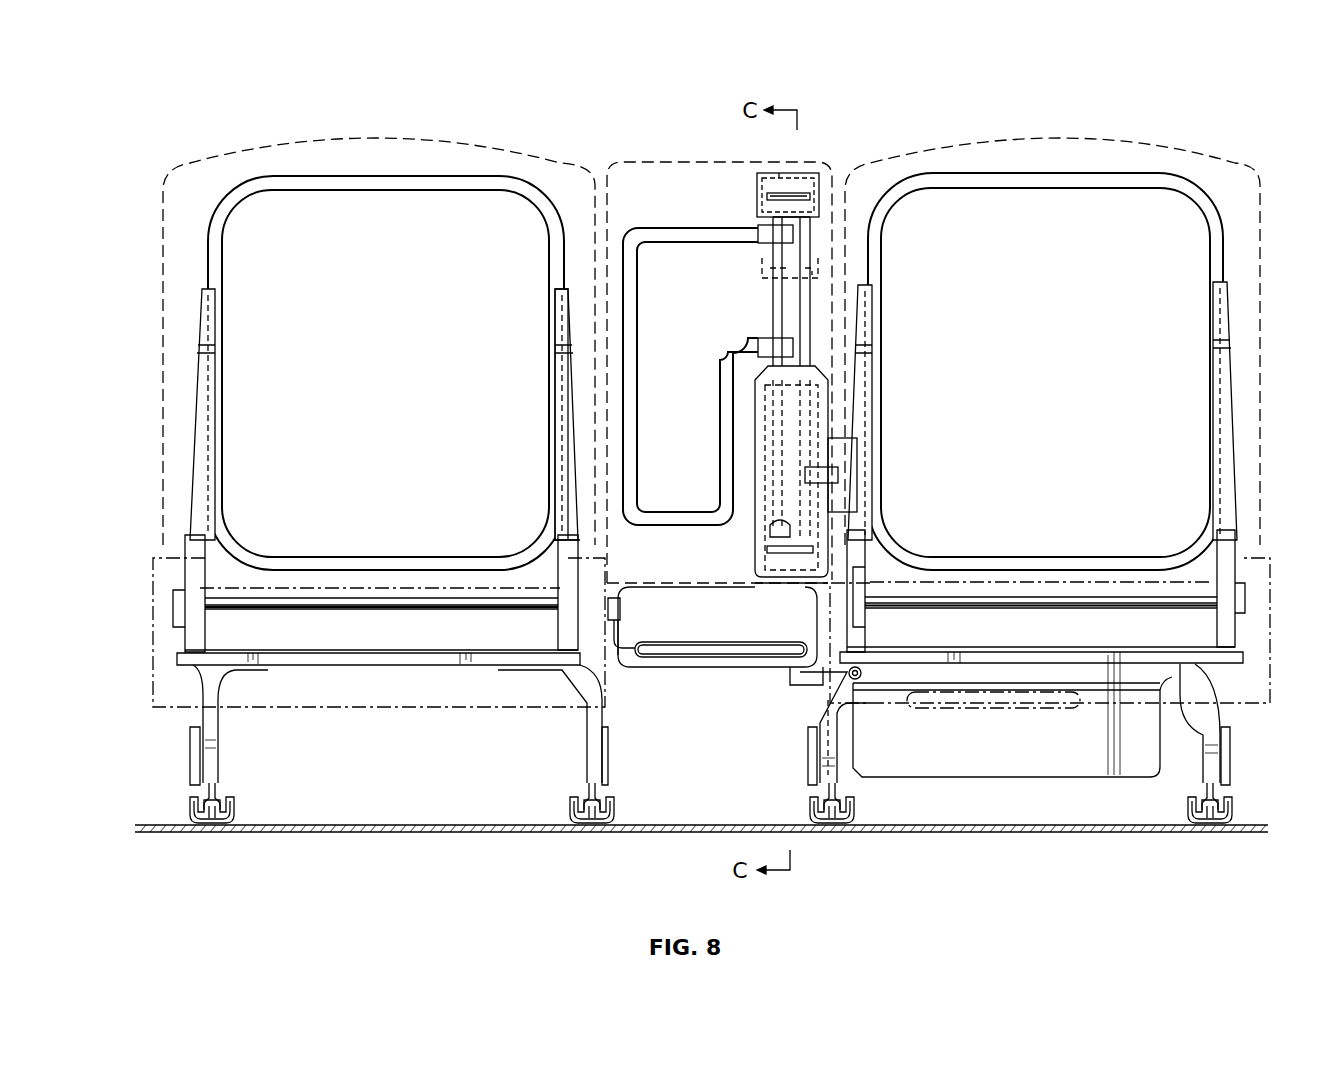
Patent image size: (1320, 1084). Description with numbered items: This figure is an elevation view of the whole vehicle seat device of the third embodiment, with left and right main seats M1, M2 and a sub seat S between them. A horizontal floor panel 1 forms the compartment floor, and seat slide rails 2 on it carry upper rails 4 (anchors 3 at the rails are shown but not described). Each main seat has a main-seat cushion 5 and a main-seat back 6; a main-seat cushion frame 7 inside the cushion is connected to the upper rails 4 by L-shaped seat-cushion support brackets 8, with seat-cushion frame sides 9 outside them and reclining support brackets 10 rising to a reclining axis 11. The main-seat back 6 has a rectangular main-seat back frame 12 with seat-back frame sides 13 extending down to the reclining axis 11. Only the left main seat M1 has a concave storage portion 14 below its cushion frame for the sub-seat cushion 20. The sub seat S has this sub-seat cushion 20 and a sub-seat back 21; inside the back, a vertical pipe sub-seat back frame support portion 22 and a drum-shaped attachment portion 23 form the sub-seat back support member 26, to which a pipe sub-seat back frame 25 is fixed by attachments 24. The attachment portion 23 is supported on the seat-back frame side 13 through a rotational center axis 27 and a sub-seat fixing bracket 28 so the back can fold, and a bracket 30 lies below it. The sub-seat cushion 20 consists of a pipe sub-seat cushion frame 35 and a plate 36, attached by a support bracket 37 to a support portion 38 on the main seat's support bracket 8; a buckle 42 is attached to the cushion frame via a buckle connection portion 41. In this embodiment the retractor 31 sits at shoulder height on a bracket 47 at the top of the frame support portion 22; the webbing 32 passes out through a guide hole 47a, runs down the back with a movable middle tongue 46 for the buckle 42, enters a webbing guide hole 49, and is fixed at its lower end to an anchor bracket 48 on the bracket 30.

The floor panel 1 is at (680, 825).
The seat slide rail 2 is at (238, 808).
The anchor 3 is at (208, 822).
The upper rail 4 is at (198, 800).
The main-seat cushion 5 is at (153, 690).
The main-seat back 6 is at (175, 168).
The main-seat cushion frame 7 is at (365, 664).
The seat-cushion support bracket 8 is at (220, 742).
The seat-cushion frame side 9 is at (190, 755).
The reclining support bracket 10 is at (188, 640).
The reclining axis 11 is at (337, 610).
The main-seat back frame 12 is at (340, 190).
The seat-back frame side 13 is at (215, 402).
The storage portion 14 is at (1002, 778).
The sub-seat cushion 20 is at (708, 667).
The sub-seat back 21 is at (688, 162).
The sub-seat back frame support portion 22 is at (783, 312).
The attachment portion 23 is at (806, 395).
The attachment 24 is at (758, 232).
The sub-seat back frame 25 is at (637, 322).
The sub-seat back support member 26 is at (945, 255).
The rotational center axis 27 is at (805, 477).
The sub-seat fixing bracket 28 is at (857, 457).
The bracket 30 is at (765, 577).
The retractor 31 is at (790, 172).
The webbing 32 is at (883, 238).
The sub-seat cushion frame 35 is at (660, 667).
The plate 36 is at (690, 642).
The support bracket 37 is at (800, 686).
The support portion 38 is at (860, 677).
The buckle connection portion 41 is at (610, 667).
The buckle 42 is at (621, 605).
The middle tongue 46 is at (762, 275).
The bracket 47 is at (773, 175).
The guide hole 47a is at (790, 195).
The anchor bracket 48 is at (770, 552).
The webbing guide hole 49 is at (778, 527).
The main seat M1 is at (1150, 142).
The main seat M2 is at (279, 142).
The sub seat S is at (652, 160).